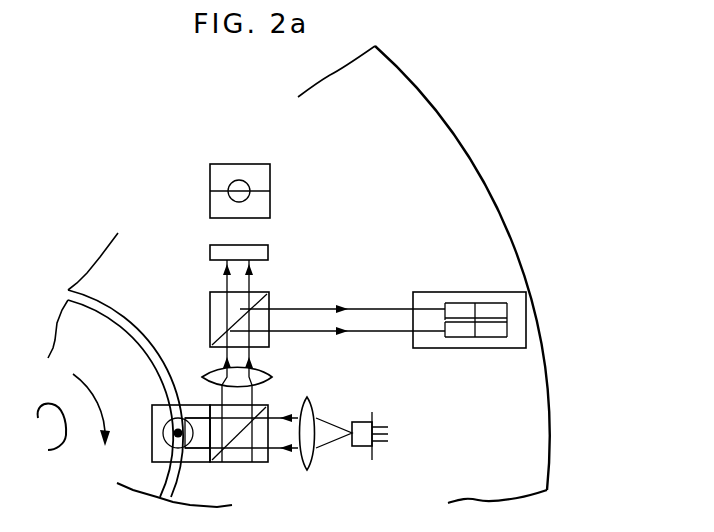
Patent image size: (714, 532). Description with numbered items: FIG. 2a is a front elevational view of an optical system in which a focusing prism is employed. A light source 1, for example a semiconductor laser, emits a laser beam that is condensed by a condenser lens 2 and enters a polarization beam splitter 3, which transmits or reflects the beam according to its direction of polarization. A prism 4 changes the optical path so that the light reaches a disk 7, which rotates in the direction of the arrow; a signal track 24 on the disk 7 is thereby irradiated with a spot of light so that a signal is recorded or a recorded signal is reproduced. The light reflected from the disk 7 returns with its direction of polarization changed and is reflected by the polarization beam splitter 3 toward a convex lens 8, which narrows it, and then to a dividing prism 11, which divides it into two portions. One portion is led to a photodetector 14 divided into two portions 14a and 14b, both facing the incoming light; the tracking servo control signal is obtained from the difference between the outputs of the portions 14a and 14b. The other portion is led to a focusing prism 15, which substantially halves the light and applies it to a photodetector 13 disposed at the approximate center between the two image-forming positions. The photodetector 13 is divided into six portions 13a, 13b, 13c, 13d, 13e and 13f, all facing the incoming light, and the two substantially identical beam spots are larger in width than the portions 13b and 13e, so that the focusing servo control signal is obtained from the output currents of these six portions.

The light source 1 is at (375, 415).
The condenser lens 2 is at (313, 413).
The polarization beam splitter 3 is at (233, 462).
The prism 4 is at (188, 462).
The disk 7 is at (549, 447).
The convex lens 8 is at (272, 377).
The dividing prism 11 is at (267, 294).
The photodetector 13 is at (497, 303).
The photodetector portion 13a is at (472, 348).
The photodetector portion 13b is at (455, 337).
The photodetector portion 13c is at (449, 305).
The photodetector portion 13d is at (500, 337).
The photodetector portion 13e is at (510, 322).
The photodetector portion 13f is at (508, 300).
The photodetector 14 is at (268, 245).
The photodetector portion 14a is at (270, 164).
The photodetector portion 14b is at (210, 207).
The focusing prism 15 is at (462, 292).
The signal track 24 is at (128, 316).